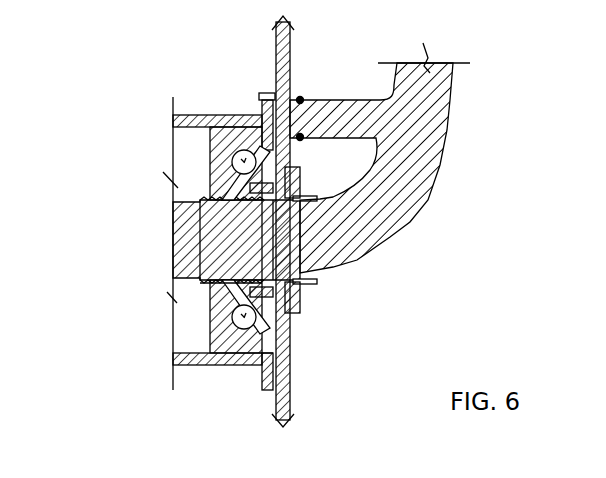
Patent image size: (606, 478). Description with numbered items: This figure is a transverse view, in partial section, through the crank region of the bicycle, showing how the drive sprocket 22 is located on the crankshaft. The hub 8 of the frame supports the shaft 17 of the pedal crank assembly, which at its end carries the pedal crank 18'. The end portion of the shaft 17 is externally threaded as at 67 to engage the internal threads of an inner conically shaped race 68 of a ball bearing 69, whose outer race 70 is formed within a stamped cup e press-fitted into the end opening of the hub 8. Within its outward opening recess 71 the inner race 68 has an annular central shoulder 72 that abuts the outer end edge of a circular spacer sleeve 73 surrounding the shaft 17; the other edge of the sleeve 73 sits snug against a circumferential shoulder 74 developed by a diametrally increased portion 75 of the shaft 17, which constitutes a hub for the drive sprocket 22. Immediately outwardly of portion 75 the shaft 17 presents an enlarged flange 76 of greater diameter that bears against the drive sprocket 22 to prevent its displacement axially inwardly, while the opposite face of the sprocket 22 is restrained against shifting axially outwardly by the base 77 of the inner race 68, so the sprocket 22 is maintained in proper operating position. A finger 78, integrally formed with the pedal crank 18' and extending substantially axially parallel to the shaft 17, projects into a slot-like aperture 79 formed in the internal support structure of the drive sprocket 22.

The hub 8 is at (203, 112).
The finger 78 is at (260, 122).
The slot-like aperture 79 is at (270, 96).
The stamped cup e is at (200, 146).
The pedal crank 18' is at (423, 158).
The shaft 17 is at (173, 241).
The external threads 67 is at (207, 276).
The inner conically shaped race 68 is at (212, 297).
The ball bearing 69 is at (228, 325).
The outer race 70 is at (173, 350).
The circumferential shoulder 74 is at (300, 285).
The annular central shoulder 72 is at (295, 290).
The circular spacer sleeve 73 is at (293, 295).
The diametrally increased portion 75 is at (290, 297).
The enlarged flange 76 is at (290, 305).
The outward opening recess 71 is at (290, 313).
The base 77 is at (290, 320).
The drive sprocket 22 is at (300, 407).